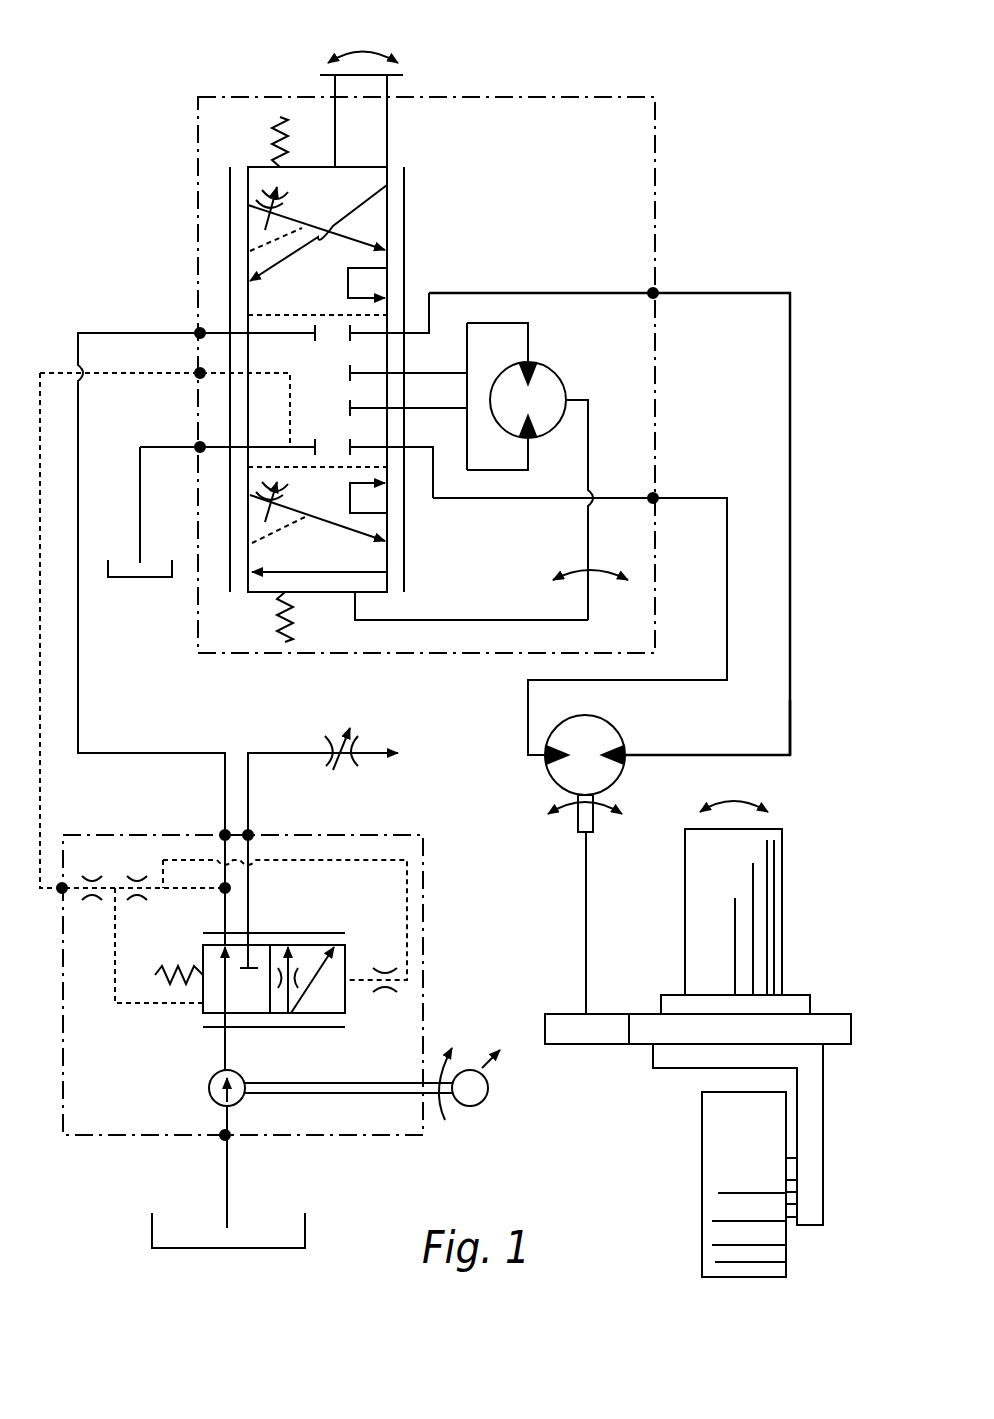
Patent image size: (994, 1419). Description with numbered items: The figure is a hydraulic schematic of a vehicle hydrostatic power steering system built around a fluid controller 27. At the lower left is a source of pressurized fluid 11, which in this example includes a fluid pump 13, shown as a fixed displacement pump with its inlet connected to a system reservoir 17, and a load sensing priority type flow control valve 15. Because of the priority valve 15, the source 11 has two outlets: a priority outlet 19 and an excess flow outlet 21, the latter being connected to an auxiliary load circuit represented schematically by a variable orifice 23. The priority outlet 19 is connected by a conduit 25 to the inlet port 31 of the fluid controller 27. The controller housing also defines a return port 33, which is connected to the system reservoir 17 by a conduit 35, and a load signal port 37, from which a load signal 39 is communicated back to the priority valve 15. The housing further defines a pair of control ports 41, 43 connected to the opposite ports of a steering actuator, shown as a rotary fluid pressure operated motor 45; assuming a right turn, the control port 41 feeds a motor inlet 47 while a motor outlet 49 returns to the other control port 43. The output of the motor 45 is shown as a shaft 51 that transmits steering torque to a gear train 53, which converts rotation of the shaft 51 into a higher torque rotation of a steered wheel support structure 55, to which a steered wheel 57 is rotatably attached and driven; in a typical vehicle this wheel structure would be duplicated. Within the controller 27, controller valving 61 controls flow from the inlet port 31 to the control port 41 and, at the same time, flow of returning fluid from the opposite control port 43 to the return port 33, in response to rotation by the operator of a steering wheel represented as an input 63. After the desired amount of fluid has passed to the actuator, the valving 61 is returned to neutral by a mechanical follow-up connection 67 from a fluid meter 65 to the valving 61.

The source of pressurized fluid 11 is at (440, 890).
The fluid pump 13 is at (210, 1090).
The load sensing priority type flow control valve 15 is at (345, 1000).
The system reservoir 17 is at (143, 580).
The priority outlet 19 is at (225, 835).
The excess flow outlet 21 is at (248, 835).
The variable orifice 23 is at (360, 740).
The conduit 25 is at (80, 670).
The fluid controller 27 is at (185, 75).
The inlet port 31 is at (200, 333).
The return port 33 is at (200, 447).
The conduit 35 is at (227, 1210).
The load signal port 37 is at (200, 373).
The load signal 39 is at (42, 812).
The control port 41 is at (653, 498).
The control port 43 is at (653, 293).
The rotary fluid pressure operated motor 45 is at (610, 728).
The motor inlet 47 is at (545, 762).
The motor outlet 49 is at (712, 755).
The shaft 51 is at (584, 925).
The gear train 53 is at (628, 1060).
The steered wheel support structure 55 is at (823, 1130).
The steered wheel 57 is at (702, 1171).
The controller valving 61 is at (430, 212).
The input 63 is at (430, 58).
The fluid meter 65 is at (558, 380).
The mechanical follow-up connection 67 is at (505, 620).